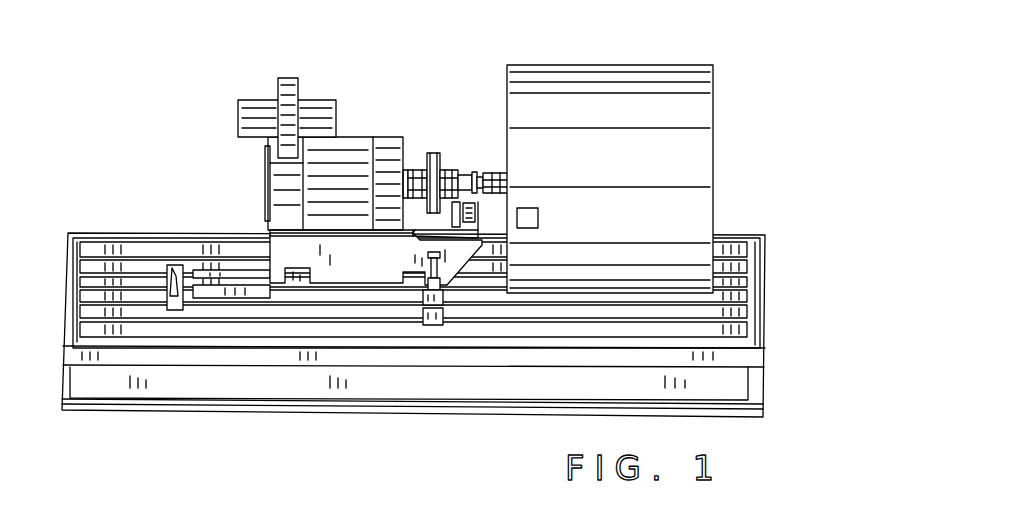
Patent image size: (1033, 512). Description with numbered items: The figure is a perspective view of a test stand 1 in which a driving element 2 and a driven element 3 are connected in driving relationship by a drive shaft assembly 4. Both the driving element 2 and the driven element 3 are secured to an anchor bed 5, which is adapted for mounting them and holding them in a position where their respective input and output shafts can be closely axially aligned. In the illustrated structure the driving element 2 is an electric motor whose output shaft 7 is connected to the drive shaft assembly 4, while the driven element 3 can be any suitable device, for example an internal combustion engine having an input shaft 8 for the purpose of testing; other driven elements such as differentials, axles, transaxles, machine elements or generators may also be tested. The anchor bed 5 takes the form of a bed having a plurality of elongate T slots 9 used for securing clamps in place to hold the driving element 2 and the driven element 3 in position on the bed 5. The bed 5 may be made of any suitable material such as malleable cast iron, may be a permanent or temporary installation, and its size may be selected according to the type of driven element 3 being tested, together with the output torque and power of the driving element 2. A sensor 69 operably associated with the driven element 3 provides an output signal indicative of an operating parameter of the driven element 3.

The test stand 1 is at (426, 82).
The driving element 2 is at (355, 137).
The driven element 3 is at (622, 65).
The drive shaft assembly 4 is at (431, 153).
The anchor bed 5 is at (112, 233).
The output shaft 7 is at (412, 167).
The input shaft 8 is at (508, 180).
The elongate T slots 9 is at (78, 308).
The sensor 69 is at (528, 208).